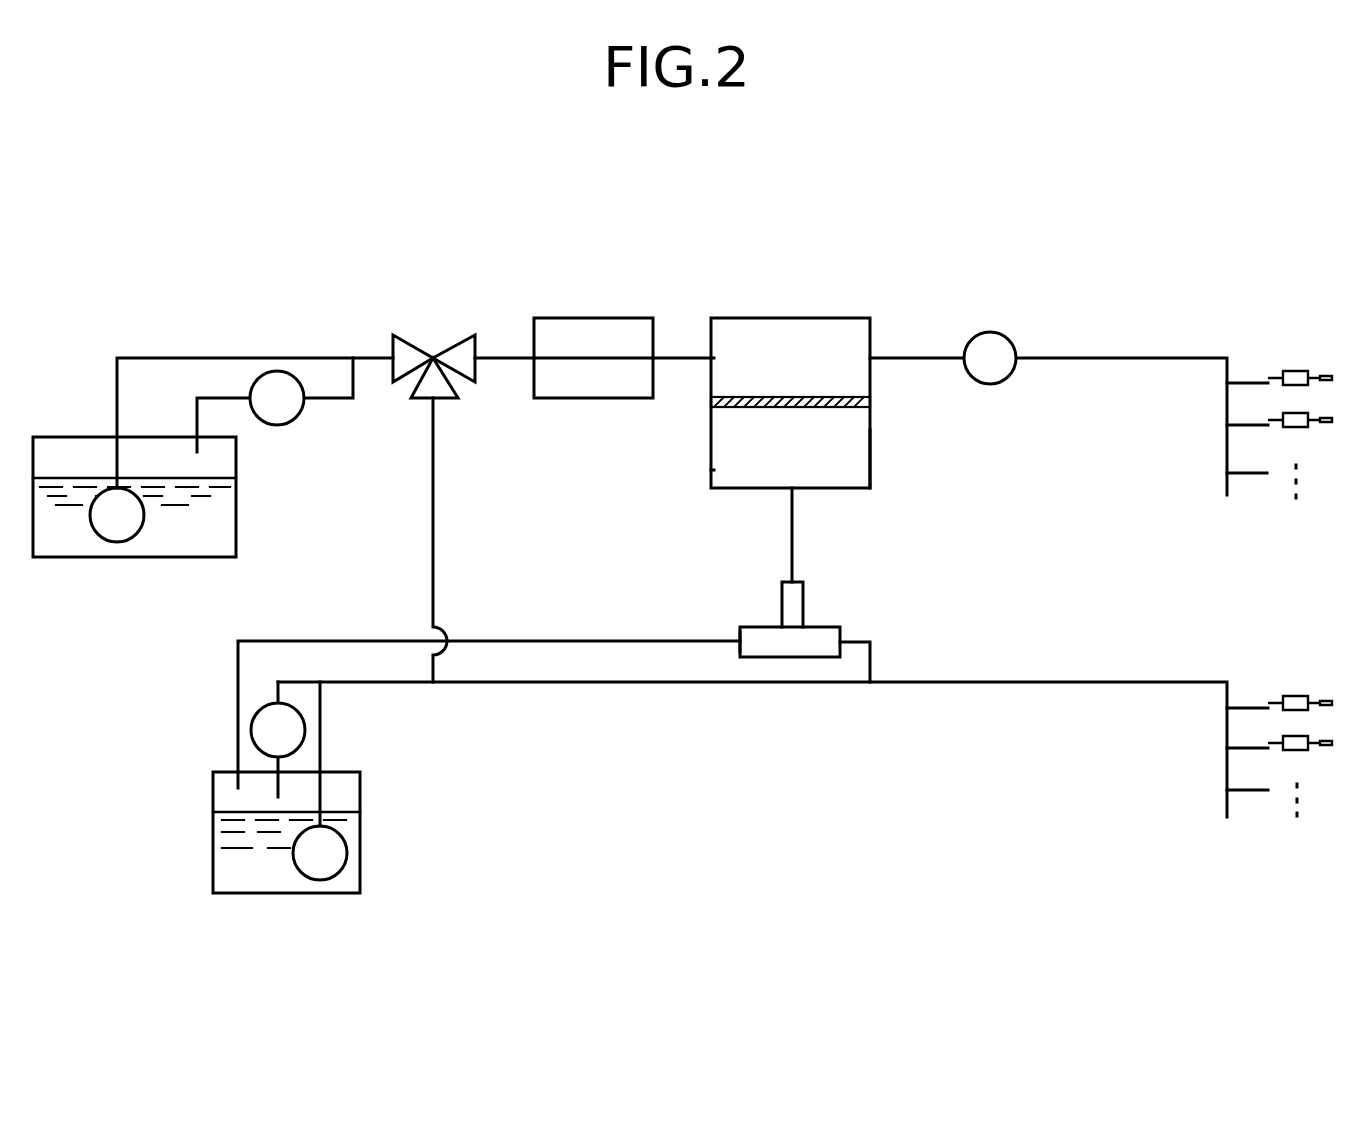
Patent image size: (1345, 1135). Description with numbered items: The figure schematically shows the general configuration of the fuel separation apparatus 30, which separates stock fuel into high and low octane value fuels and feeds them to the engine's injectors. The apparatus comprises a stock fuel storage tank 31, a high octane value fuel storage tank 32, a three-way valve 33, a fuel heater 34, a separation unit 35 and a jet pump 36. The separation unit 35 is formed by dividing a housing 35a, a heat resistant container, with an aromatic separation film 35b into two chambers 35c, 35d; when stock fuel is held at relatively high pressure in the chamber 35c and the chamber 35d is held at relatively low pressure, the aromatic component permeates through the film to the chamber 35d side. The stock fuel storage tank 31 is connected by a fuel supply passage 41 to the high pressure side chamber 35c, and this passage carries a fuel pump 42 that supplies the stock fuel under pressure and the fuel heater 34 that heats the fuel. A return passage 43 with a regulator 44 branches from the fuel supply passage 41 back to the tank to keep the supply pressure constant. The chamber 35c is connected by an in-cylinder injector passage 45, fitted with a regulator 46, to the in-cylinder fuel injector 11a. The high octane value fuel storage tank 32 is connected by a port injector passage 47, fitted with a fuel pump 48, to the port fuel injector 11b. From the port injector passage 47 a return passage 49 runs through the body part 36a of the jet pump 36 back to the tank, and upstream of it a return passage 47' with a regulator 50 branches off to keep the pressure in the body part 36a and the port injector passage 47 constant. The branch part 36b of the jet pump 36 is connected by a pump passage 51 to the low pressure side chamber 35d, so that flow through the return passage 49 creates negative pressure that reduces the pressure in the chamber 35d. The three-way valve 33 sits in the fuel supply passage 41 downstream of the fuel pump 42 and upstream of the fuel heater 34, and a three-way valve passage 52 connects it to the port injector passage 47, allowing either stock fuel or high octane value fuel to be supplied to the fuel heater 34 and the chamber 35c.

The fuel separation apparatus 30 is at (590, 257).
The stock fuel storage tank 31 is at (72, 437).
The high octane value fuel storage tank 32 is at (362, 790).
The three-way valve 33 is at (447, 338).
The fuel heater 34 is at (630, 318).
The separation unit 35 is at (788, 398).
The housing 35a is at (870, 468).
The aromatic separation film 35b is at (855, 386).
The chamber 35c is at (726, 373).
The chamber 35d is at (737, 470).
The jet pump 36 is at (787, 599).
The body part 36a is at (740, 636).
The branch part 36b is at (805, 597).
The fuel supply passage 41 is at (313, 358).
The fuel pump 42 is at (138, 533).
The return passage 43 is at (345, 400).
The regulator 44 is at (291, 426).
The in-cylinder injector passage 45 is at (1122, 358).
The regulator 46 is at (1011, 376).
The port injector passage 47 is at (752, 716).
The return passage 47' is at (307, 682).
The fuel pump 48 is at (347, 866).
The return passage 49 is at (555, 641).
The regulator 50 is at (251, 729).
The pump passage 51 is at (792, 532).
The three-way valve passage 52 is at (434, 510).
The in-cylinder fuel injector 11a is at (1292, 372).
The port fuel injector 11b is at (1298, 697).